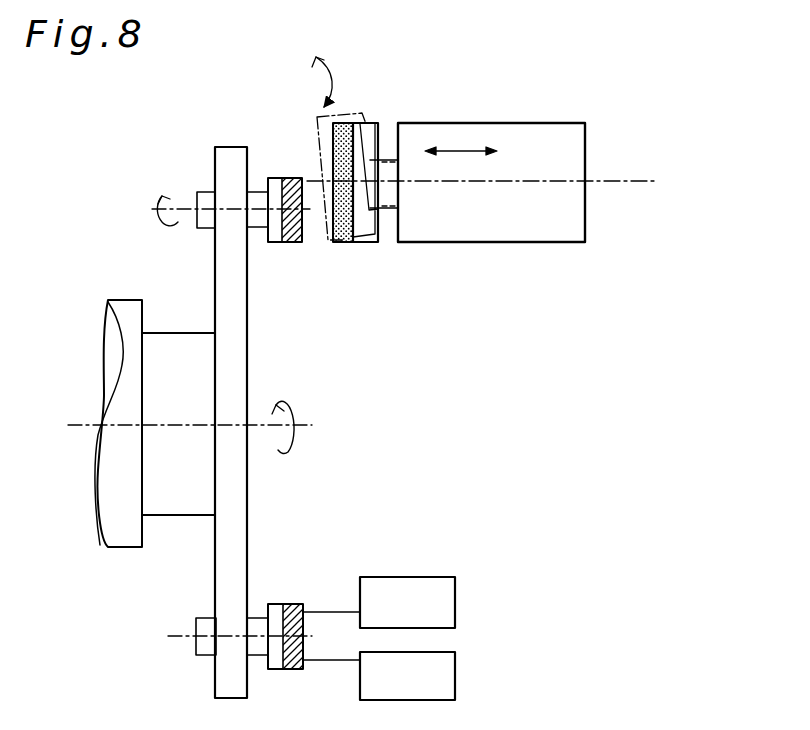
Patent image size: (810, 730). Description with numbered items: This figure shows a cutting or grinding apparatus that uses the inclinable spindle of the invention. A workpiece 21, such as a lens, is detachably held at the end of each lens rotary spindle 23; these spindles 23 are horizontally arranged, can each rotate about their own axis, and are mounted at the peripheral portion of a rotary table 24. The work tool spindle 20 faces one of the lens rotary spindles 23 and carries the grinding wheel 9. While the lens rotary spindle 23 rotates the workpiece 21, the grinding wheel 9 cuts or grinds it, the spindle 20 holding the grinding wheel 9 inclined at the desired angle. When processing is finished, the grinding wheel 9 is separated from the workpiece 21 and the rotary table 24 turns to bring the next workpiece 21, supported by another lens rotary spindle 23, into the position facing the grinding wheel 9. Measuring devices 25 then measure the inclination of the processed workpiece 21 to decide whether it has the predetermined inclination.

The grinding wheel 9 is at (371, 121).
The work tool spindle 20 is at (528, 143).
The workpiece 21 is at (288, 176).
The lens rotary spindle 23 is at (206, 186).
The rotary table 24 is at (238, 367).
The measuring devices 25 is at (432, 675).